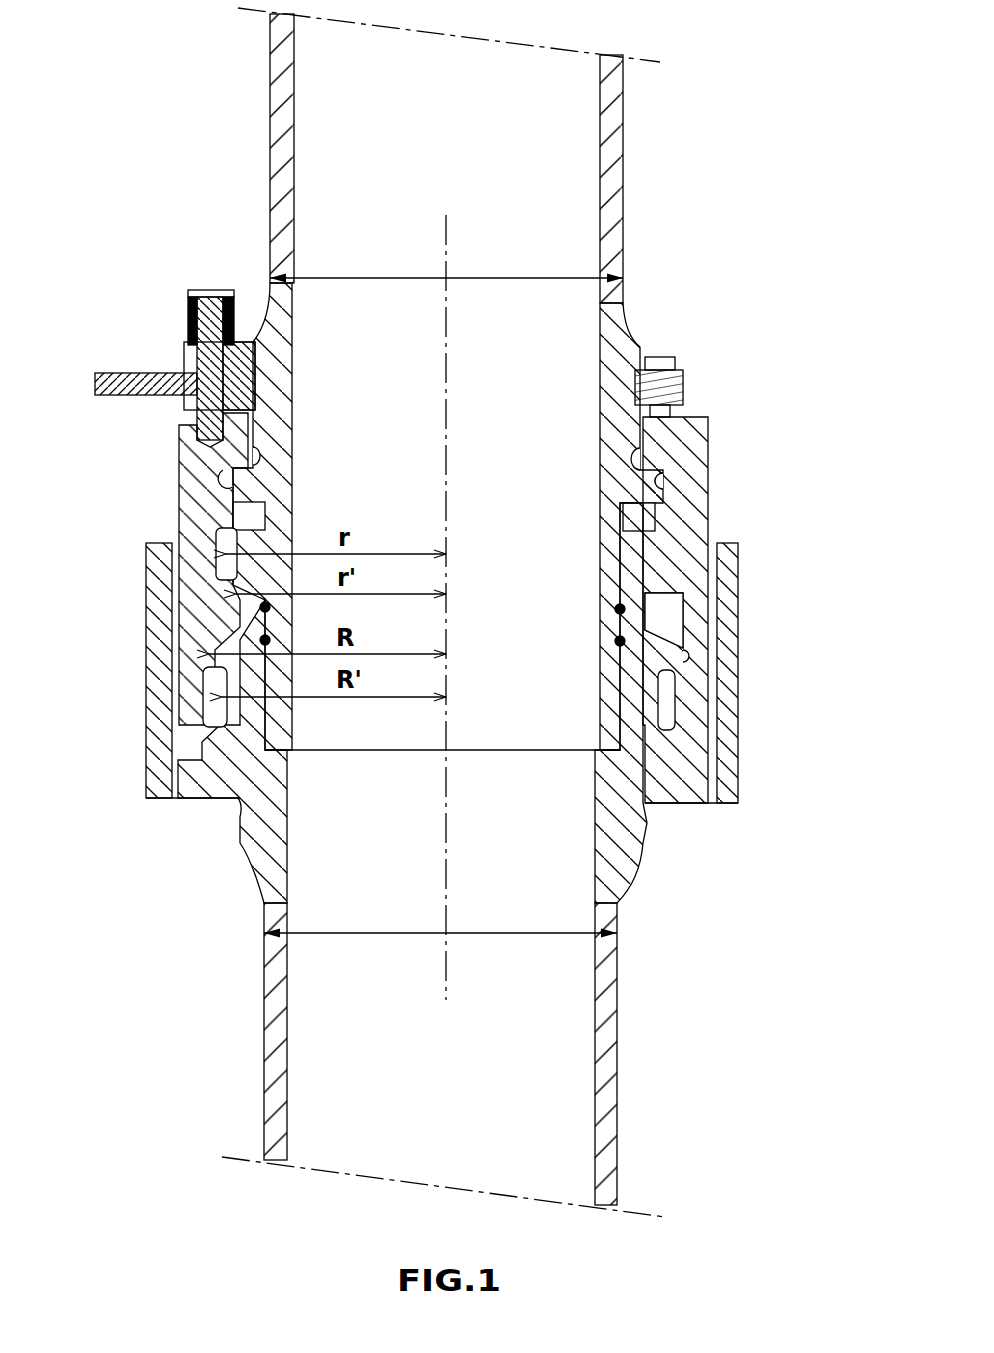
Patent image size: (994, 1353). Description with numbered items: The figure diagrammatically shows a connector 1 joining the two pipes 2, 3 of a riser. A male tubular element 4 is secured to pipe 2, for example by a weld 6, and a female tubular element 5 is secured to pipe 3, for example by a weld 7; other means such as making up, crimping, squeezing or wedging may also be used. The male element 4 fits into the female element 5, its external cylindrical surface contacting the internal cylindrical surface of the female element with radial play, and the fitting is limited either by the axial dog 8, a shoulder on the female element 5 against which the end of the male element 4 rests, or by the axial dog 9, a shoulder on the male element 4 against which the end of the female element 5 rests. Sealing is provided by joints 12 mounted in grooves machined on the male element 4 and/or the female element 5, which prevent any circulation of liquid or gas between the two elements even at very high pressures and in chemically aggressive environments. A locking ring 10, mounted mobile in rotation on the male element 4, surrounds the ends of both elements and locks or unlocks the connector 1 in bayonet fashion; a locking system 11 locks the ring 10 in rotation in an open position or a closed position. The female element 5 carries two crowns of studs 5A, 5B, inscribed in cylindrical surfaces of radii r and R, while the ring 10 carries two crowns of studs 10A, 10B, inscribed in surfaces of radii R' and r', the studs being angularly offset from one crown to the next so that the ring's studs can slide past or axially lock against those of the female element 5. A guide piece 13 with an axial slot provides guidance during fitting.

The connector 1 is at (440, 680).
The pipe 2 is at (553, 158).
The pipe 3 is at (542, 1054).
The male tubular element 4 is at (533, 511).
The female tubular element 5 is at (499, 710).
The second crown of studs 5A is at (748, 510).
The first crown of studs 5B is at (762, 653).
The weld 6 is at (551, 237).
The weld 7 is at (542, 959).
The axial dog 8 is at (388, 856).
The axial dog 9 is at (392, 404).
The locking ring 10 is at (92, 503).
The second crown of studs 10A is at (755, 708).
The first crown of studs 10B is at (749, 609).
The locking system 11 is at (92, 255).
The joints 12 is at (550, 590).
The guide piece 13 is at (493, 687).